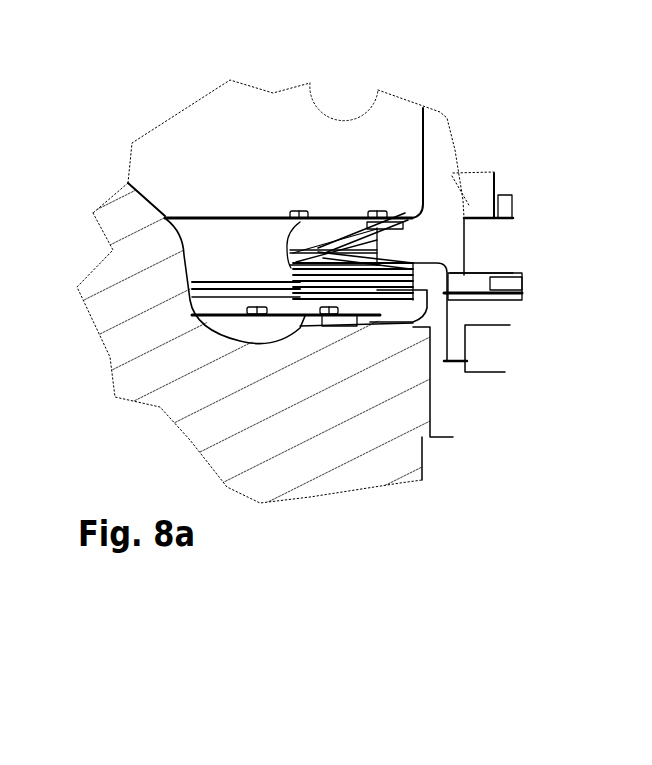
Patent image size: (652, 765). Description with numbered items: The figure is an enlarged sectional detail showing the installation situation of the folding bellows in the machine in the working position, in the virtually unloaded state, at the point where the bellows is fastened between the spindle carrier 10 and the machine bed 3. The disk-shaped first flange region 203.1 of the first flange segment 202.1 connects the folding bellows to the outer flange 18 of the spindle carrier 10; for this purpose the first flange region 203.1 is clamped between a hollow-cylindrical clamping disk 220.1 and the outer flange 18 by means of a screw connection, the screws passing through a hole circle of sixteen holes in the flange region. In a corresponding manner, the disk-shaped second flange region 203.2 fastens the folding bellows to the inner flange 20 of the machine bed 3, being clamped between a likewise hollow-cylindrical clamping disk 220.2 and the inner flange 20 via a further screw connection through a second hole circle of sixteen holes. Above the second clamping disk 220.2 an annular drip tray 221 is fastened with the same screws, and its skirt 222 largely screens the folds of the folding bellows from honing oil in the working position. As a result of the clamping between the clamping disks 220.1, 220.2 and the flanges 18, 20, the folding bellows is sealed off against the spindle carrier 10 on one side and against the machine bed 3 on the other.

The machine bed 3 is at (454, 176).
The spindle carrier 10 is at (358, 395).
The outer flange 18 is at (344, 328).
The inner flange 20 is at (413, 236).
The first flange segment 202.1 is at (415, 327).
The first flange region 203.1 is at (350, 327).
The second flange region 203.2 is at (410, 224).
The hollow-cylindrical clamping disk 220.1 is at (325, 318).
The hollow-cylindrical clamping disk 220.2 is at (415, 219).
The annular drip tray 221 is at (362, 226).
The skirt 222 is at (297, 213).